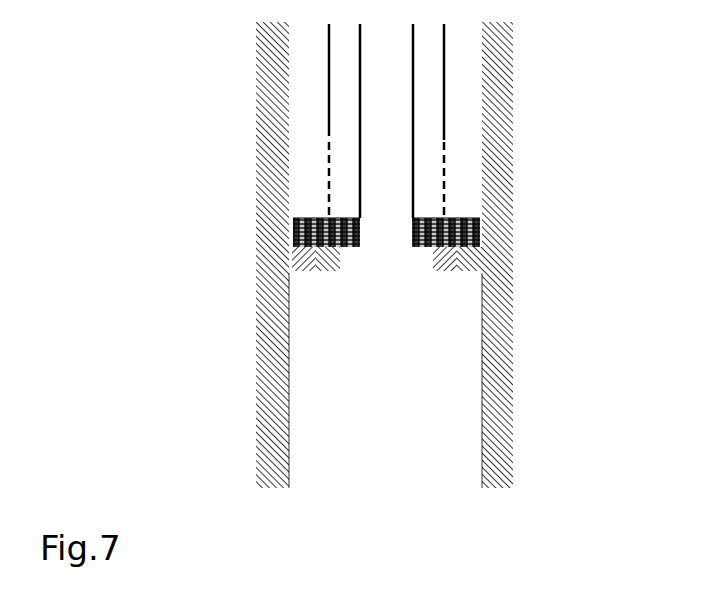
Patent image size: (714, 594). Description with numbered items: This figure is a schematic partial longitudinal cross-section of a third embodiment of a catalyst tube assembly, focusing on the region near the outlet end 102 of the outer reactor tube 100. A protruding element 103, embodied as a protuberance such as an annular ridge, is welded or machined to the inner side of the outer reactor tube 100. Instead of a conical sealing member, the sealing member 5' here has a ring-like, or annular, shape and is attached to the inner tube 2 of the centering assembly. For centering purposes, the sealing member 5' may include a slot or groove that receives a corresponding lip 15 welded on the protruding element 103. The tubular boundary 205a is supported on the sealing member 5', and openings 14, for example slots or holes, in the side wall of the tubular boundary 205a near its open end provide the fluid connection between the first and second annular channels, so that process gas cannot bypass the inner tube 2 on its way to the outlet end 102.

The outer reactor tube 100 is at (258, 228).
The outlet end 102 is at (348, 482).
The protruding element 103 is at (512, 262).
The lip 15 is at (483, 227).
The sealing member 5' is at (439, 183).
The openings 14 is at (328, 175).
The tubular boundary 205a is at (447, 103).
The inner tube 2 is at (443, 138).